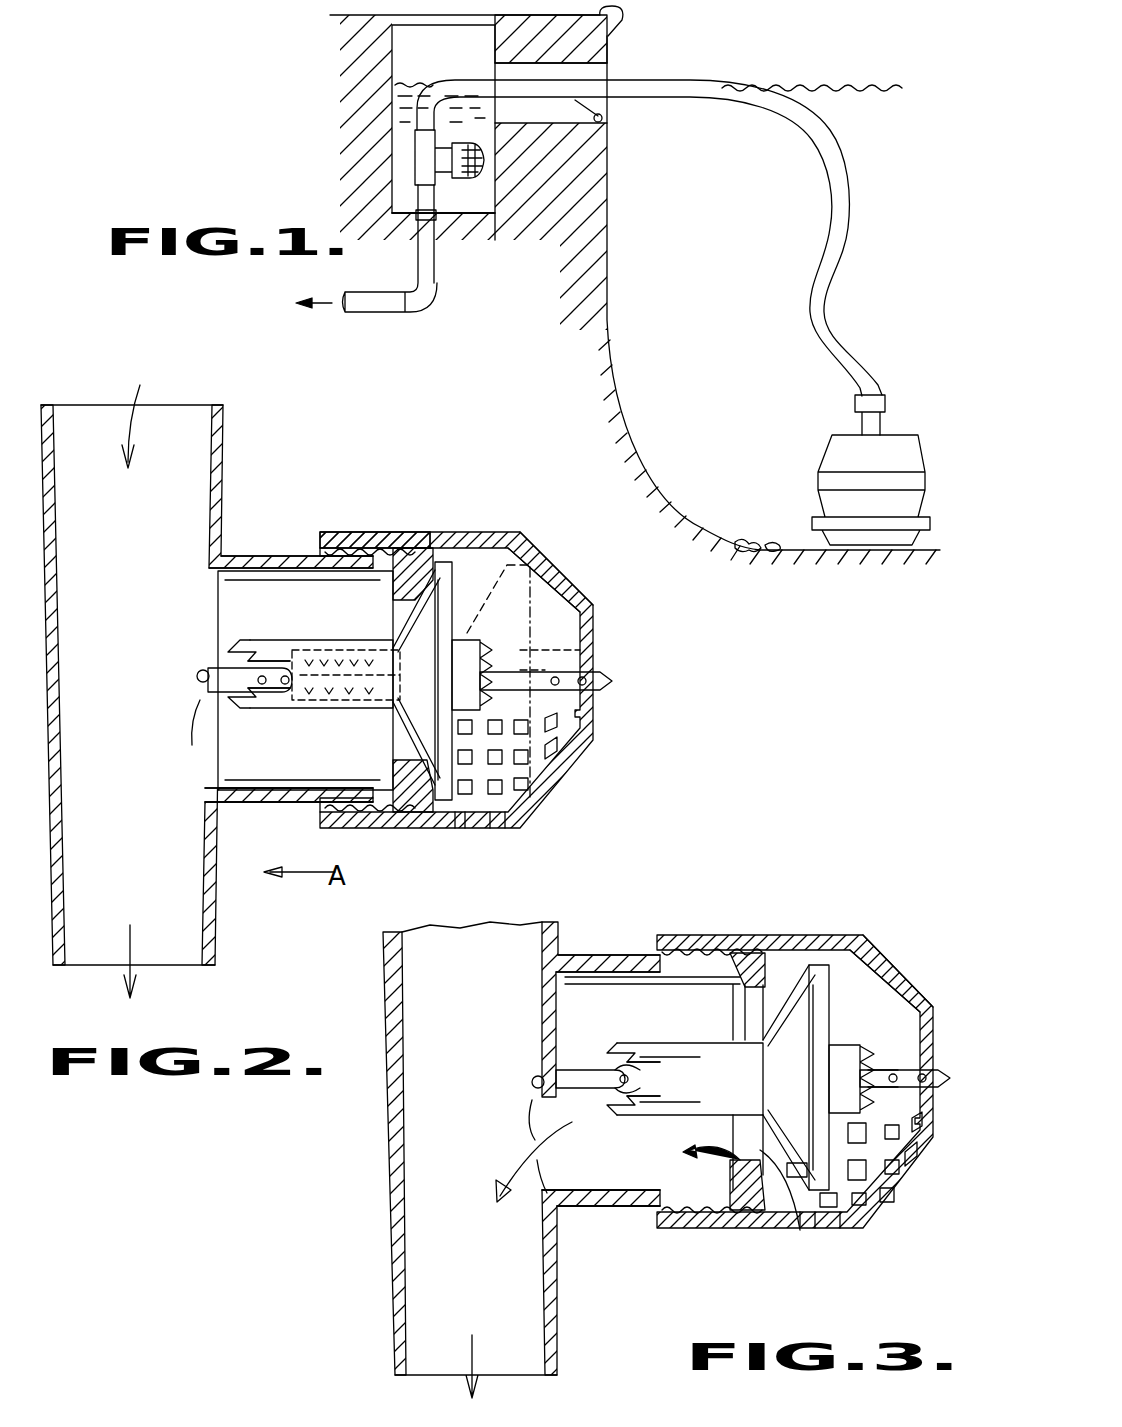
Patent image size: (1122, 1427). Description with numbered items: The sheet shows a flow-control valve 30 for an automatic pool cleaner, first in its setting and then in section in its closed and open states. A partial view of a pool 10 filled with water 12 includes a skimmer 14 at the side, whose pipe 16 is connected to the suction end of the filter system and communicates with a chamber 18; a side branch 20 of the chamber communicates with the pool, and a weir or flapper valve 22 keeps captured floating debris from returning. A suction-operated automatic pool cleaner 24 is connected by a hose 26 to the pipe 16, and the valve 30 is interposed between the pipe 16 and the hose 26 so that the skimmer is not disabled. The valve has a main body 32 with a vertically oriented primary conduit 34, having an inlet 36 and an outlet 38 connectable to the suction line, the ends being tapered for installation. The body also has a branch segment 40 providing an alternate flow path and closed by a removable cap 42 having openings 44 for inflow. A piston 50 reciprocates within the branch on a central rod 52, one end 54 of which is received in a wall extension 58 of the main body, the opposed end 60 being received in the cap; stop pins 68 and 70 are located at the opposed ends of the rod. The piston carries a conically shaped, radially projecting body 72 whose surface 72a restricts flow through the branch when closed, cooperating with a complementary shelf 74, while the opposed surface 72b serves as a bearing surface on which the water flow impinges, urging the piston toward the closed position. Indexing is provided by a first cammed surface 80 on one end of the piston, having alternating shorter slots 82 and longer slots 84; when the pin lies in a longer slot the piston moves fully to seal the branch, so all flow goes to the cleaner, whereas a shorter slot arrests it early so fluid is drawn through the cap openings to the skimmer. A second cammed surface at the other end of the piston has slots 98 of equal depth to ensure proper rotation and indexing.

In FIG. 1, the pool 10 is at (612, 350).
In FIG. 1, the water 12 is at (716, 241).
In FIG. 1, the skimmer 14 is at (415, 46).
In FIG. 1, the pipe 16 is at (434, 268).
In FIG. 1, the chamber 18 is at (492, 186).
In FIG. 1, the side branch 20 is at (545, 125).
In FIG. 1, the weir or flapper valve 22 is at (603, 108).
In FIG. 1, the automatic pool cleaner 24 is at (818, 458).
In FIG. 1, the hose 26 is at (828, 345).
In FIG. 1, the valve 30 is at (418, 152).
In FIG. 2, the valve 30 is at (302, 458).
In FIG. 3, the valve 30 is at (586, 915).
In FIG. 2, the main body 32 is at (232, 542).
In FIG. 3, the main body 32 is at (375, 1140).
In FIG. 2, the primary conduit 34 is at (228, 450).
In FIG. 3, the primary conduit 34 is at (385, 984).
In FIG. 2, the inlet 36 is at (178, 405).
In FIG. 2, the outlet 38 is at (190, 968).
In FIG. 3, the outlet 38 is at (557, 1375).
In FIG. 2, the branch segment 40 is at (280, 803).
In FIG. 3, the branch segment 40 is at (612, 1206).
In FIG. 2, the removable cap 42 is at (490, 532).
In FIG. 3, the removable cap 42 is at (810, 935).
In FIG. 2, the openings 44 is at (497, 808).
In FIG. 3, the openings 44 is at (822, 1212).
In FIG. 2, the piston 50 is at (318, 640).
In FIG. 3, the piston 50 is at (688, 1043).
In FIG. 2, the central rod 52 is at (226, 698).
In FIG. 3, the central rod 52 is at (580, 1068).
In FIG. 2, the end of rod 54 is at (198, 673).
In FIG. 3, the end of rod 54 is at (533, 1080).
In FIG. 2, the wall extension 58 is at (212, 618).
In FIG. 3, the wall extension 58 is at (553, 1030).
In FIG. 2, the opposed end of rod 60 is at (612, 681).
In FIG. 3, the opposed end of rod 60 is at (940, 1078).
In FIG. 2, the stop pin 68 is at (292, 690).
In FIG. 3, the stop pin 68 is at (605, 1090).
In FIG. 2, the stop pin 70 is at (570, 660).
In FIG. 3, the stop pin 70 is at (893, 1070).
In FIG. 2, the conically shaped radially projecting body 72 is at (447, 560).
In FIG. 3, the conically shaped radially projecting body 72 is at (822, 963).
In FIG. 2, the surface of body 72a is at (385, 548).
In FIG. 2, the opposed surface of body 72b is at (520, 533).
In FIG. 3, the opposed surface of body 72b is at (830, 998).
In FIG. 2, the shelf 74 is at (410, 548).
In FIG. 3, the first cammed surface 80 is at (634, 1028).
In FIG. 2, the slots 82 is at (257, 642).
In FIG. 3, the slots 82 is at (650, 1078).
In FIG. 2, the slots 84 is at (262, 692).
In FIG. 3, the slots 84 is at (634, 1104).
In FIG. 2, the slots 98 is at (488, 655).
In FIG. 3, the slots 98 is at (872, 1052).